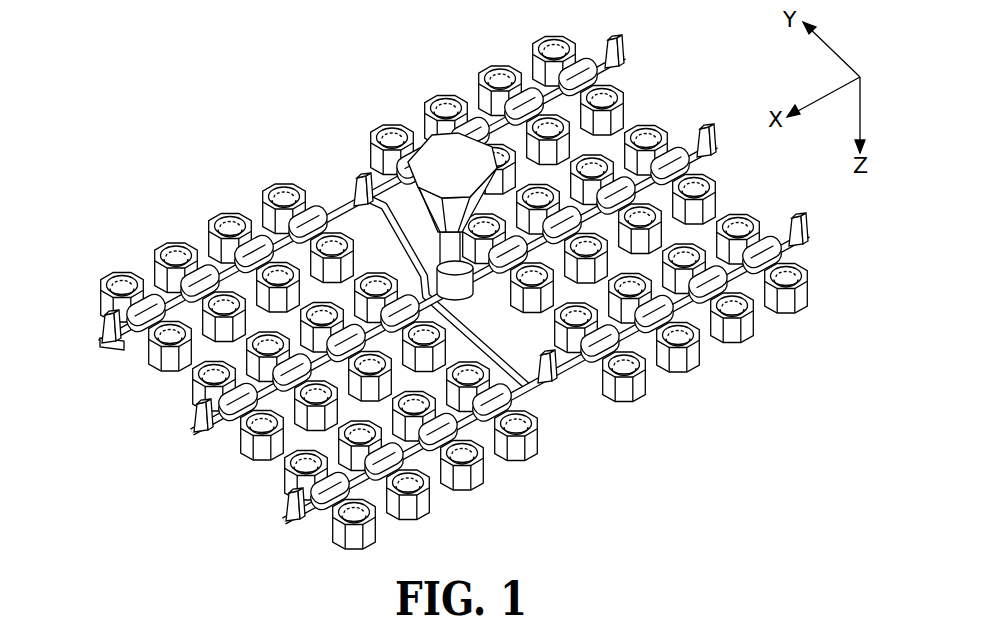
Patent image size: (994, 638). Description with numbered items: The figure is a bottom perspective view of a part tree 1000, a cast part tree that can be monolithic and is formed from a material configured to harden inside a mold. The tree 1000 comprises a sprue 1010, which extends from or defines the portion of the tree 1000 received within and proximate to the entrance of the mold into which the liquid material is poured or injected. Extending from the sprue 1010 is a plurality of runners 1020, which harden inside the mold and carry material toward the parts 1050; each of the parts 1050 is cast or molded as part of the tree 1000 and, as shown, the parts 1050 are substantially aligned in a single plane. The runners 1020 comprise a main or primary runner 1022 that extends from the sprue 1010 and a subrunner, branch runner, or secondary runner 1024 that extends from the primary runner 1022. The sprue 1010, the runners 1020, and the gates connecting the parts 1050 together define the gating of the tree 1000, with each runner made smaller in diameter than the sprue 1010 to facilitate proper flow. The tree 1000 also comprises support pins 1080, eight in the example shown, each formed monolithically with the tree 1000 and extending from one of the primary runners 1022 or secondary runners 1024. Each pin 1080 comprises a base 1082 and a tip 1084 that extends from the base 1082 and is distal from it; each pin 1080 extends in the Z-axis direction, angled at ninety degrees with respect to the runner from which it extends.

The part tree 1000 is at (234, 74).
The sprue 1010 is at (442, 160).
The runners 1020 is at (537, 397).
The primary runner 1022 is at (334, 215).
The secondary runner 1024 is at (443, 458).
The parts 1050 is at (645, 393).
The support pins 1080 is at (290, 517).
The base 1082 is at (114, 339).
The tip 1084 is at (108, 312).